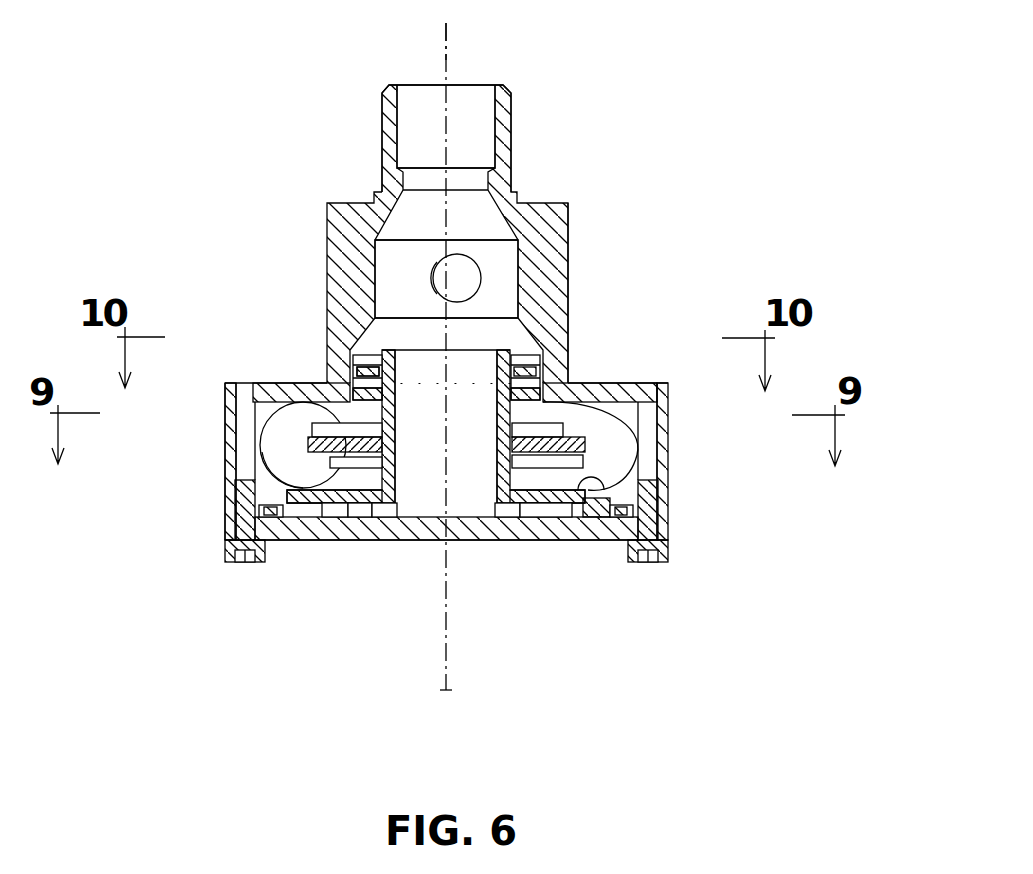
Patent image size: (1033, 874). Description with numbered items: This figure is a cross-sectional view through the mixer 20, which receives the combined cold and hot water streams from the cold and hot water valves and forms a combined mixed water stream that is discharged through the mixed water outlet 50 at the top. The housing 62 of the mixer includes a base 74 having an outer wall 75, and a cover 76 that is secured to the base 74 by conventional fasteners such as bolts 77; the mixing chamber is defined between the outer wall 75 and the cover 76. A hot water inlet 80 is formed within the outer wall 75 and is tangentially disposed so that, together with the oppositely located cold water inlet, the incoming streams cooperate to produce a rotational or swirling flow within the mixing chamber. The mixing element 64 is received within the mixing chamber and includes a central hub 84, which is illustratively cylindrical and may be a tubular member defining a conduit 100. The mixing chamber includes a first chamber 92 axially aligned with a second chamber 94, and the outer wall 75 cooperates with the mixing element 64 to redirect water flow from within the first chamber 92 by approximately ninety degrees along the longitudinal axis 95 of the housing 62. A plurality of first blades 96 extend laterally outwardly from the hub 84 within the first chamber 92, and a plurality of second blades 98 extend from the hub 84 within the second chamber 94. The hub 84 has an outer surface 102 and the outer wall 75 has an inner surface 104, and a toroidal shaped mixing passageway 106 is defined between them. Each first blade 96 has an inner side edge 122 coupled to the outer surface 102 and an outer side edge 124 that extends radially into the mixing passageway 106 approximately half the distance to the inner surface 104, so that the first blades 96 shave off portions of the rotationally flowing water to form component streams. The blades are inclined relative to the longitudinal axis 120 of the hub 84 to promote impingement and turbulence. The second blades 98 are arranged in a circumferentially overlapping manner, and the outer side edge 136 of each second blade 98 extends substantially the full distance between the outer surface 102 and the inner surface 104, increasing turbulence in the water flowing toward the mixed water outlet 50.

The mixer 20 is at (190, 646).
The mixed water outlet 50 is at (512, 120).
The housing 62 is at (745, 552).
The mixing element 64 is at (493, 344).
The base 74 is at (327, 217).
The outer wall 75 is at (568, 220).
The cover 76 is at (297, 470).
The bolts 77 is at (228, 554).
The hot water inlet 80 is at (283, 518).
The central hub 84 is at (500, 525).
The first chamber 92 is at (287, 458).
The second chamber 94 is at (511, 344).
The longitudinal axis 95 is at (445, 48).
The first blades 96 is at (262, 455).
The second blades 98 is at (352, 392).
The conduit 100 is at (461, 490).
The outer surface 102 is at (358, 495).
The inner surface 104 is at (618, 516).
The mixing passageway 106 is at (604, 460).
The longitudinal axis 120 is at (445, 690).
The inner side edge 122 is at (312, 428).
The outer side edge 124 is at (585, 442).
The outer side edge 136 is at (545, 368).